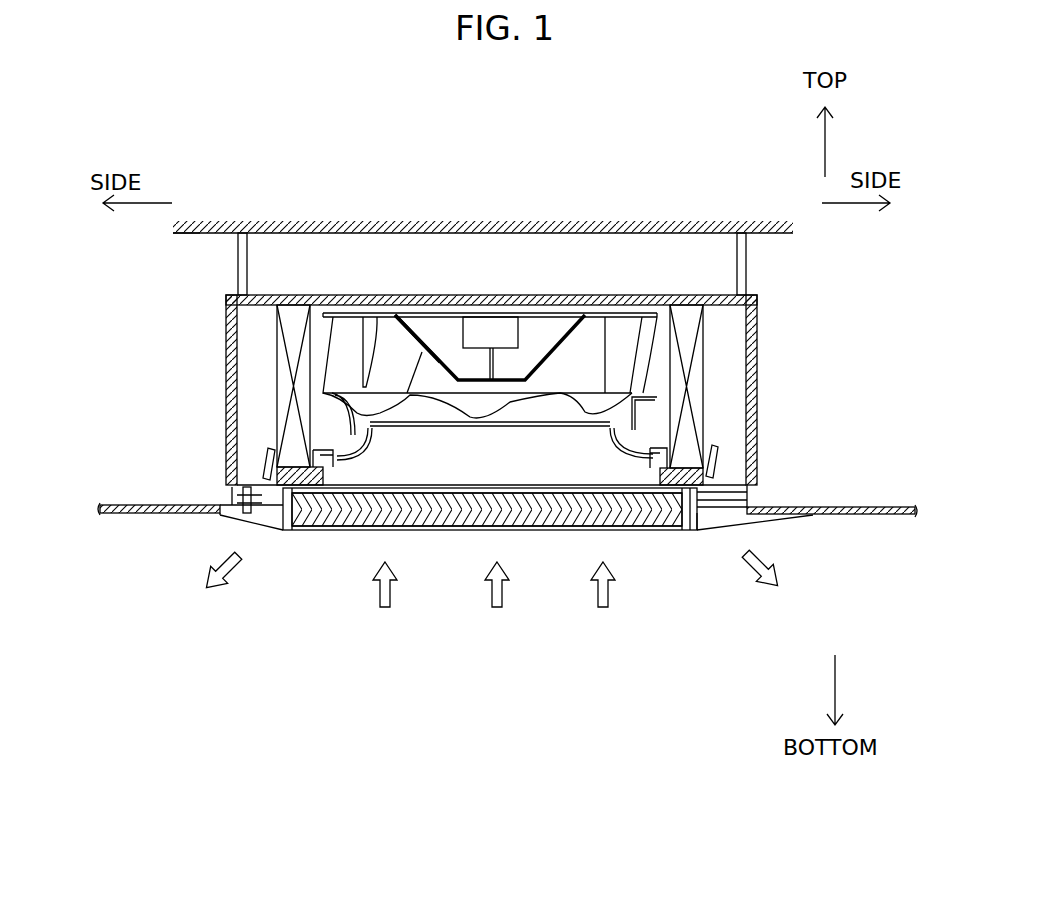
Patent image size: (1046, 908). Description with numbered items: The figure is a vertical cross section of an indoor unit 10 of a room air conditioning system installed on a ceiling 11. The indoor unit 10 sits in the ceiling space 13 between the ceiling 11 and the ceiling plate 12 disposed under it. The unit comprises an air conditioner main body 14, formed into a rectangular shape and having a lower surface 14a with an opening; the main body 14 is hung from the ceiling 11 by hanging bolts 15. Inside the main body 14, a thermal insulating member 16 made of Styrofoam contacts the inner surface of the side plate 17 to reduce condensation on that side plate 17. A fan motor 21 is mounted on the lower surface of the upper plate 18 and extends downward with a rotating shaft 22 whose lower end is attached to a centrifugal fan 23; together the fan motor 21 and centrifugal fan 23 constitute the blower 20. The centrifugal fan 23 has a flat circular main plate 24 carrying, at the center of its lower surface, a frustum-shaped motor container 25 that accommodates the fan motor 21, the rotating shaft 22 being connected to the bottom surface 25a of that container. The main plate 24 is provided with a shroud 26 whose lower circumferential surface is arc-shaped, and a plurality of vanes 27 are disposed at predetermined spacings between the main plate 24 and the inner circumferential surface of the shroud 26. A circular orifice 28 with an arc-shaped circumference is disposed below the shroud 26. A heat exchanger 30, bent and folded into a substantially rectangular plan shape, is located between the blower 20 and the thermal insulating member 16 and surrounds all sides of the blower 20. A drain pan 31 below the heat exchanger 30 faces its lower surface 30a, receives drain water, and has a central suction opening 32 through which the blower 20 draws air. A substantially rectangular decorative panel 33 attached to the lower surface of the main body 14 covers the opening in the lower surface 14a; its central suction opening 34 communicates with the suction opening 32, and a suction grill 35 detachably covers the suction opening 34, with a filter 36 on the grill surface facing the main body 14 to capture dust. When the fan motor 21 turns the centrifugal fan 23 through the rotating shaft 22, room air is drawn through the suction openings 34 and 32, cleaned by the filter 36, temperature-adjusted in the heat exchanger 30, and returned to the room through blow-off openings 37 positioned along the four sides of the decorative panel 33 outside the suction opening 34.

The indoor unit 10 is at (658, 280).
The ceiling 11 is at (770, 234).
The ceiling plate 12 is at (870, 507).
The ceiling space 13 is at (167, 336).
The air conditioner main body 14 is at (622, 293).
The lower surface 14a is at (727, 487).
The hanging bolts 15 is at (240, 270).
The thermal insulating member 16 is at (240, 330).
The side plate 17 is at (879, 364).
The upper plate 18 is at (690, 302).
The blower 20 is at (648, 135).
The fan motor 21 is at (487, 340).
The rotating shaft 22 is at (493, 378).
The centrifugal fan 23 is at (400, 313).
The main plate 24 is at (447, 313).
The motor container 25 is at (516, 378).
The bottom surface 25a is at (533, 353).
The shroud 26 is at (628, 417).
The vanes 27 is at (373, 345).
The orifice 28 is at (353, 445).
The heat exchanger 30 is at (690, 427).
The lower surface 30a is at (681, 466).
The drain pan 31 is at (275, 477).
The suction opening 32 is at (490, 544).
The decorative panel 33 is at (790, 517).
The suction opening 34 is at (427, 530).
The suction grill 35 is at (530, 530).
The filter 36 is at (633, 498).
The blow-off openings 37 is at (272, 515).